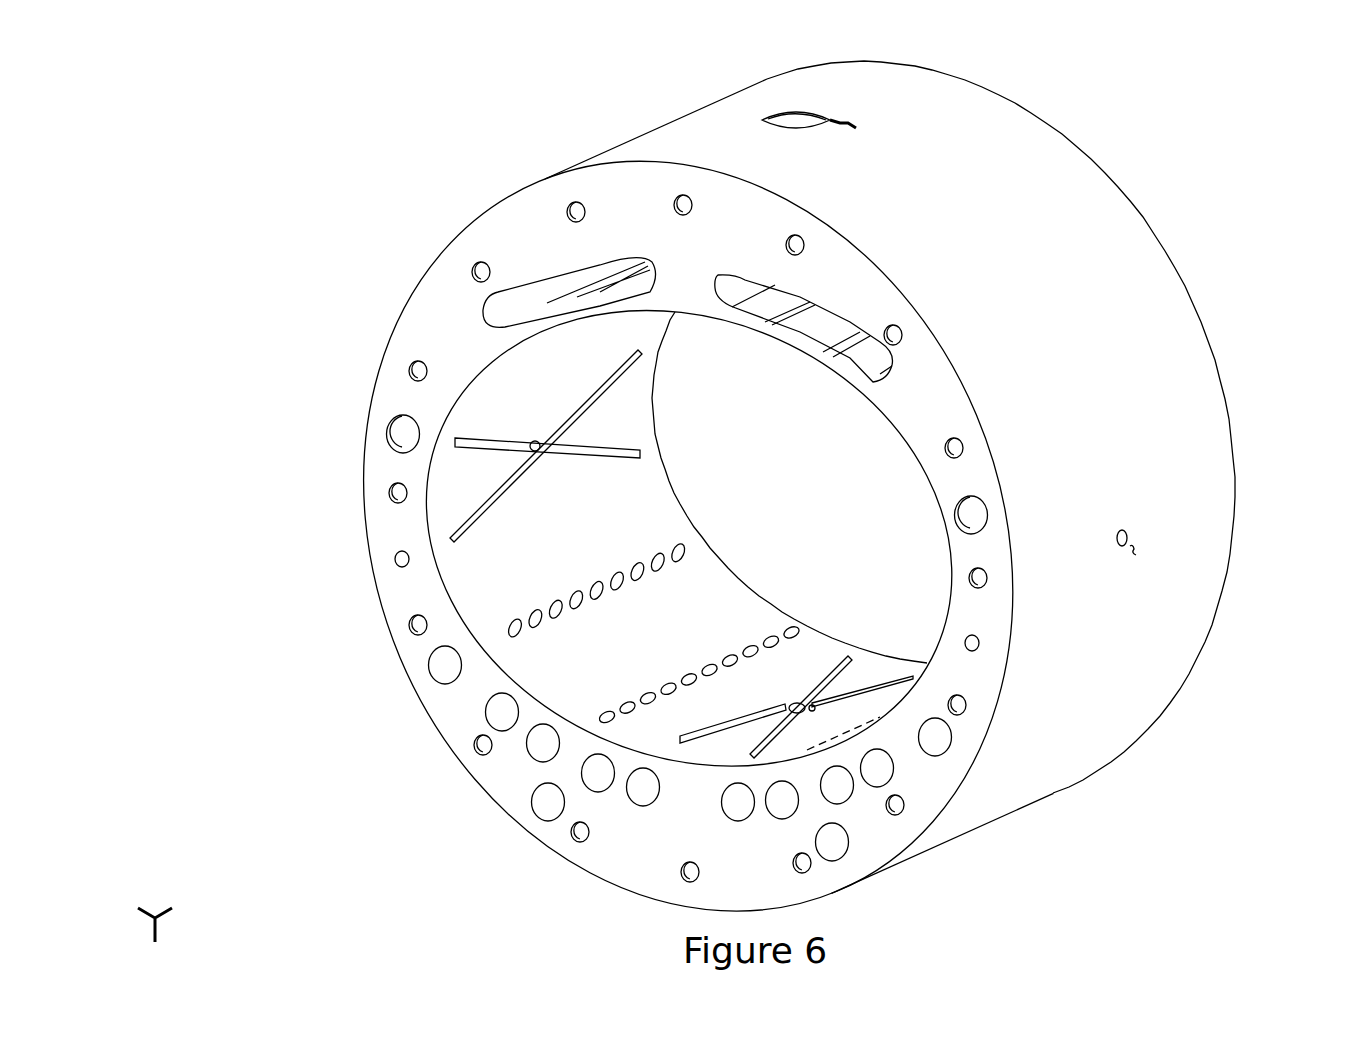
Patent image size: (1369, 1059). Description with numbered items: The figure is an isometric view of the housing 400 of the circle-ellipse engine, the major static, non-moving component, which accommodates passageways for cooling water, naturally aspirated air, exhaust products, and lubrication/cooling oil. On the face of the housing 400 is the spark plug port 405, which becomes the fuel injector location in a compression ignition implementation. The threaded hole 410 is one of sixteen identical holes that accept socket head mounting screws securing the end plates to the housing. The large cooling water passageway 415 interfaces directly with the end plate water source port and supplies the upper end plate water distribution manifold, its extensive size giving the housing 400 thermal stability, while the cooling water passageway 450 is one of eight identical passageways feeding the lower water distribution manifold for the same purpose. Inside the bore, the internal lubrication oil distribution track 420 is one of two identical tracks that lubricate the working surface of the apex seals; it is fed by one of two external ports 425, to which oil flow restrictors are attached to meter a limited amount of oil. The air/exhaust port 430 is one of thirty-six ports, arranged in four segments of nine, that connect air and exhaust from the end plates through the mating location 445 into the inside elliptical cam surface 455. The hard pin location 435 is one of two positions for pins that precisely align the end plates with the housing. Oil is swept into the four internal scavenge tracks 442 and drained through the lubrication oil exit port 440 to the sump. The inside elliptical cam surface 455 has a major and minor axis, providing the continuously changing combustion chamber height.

The housing 400 is at (248, 60).
The spark plug port 405 is at (750, 119).
The threaded hole 410 is at (560, 213).
The cooling water passageway 415 is at (505, 307).
The internal lubrication oil distribution track 420 is at (557, 421).
The external port 425 is at (1108, 536).
The air/exhaust port 430 is at (600, 581).
The hard pin location 435 is at (960, 643).
The lubrication oil exit port 440 is at (782, 707).
The internal lubrication oil scavenge track 442 is at (850, 675).
The air/exhaust port mating location 445 is at (537, 803).
The cooling water passageway 450 is at (724, 813).
The inside elliptical cam surface 455 is at (642, 301).